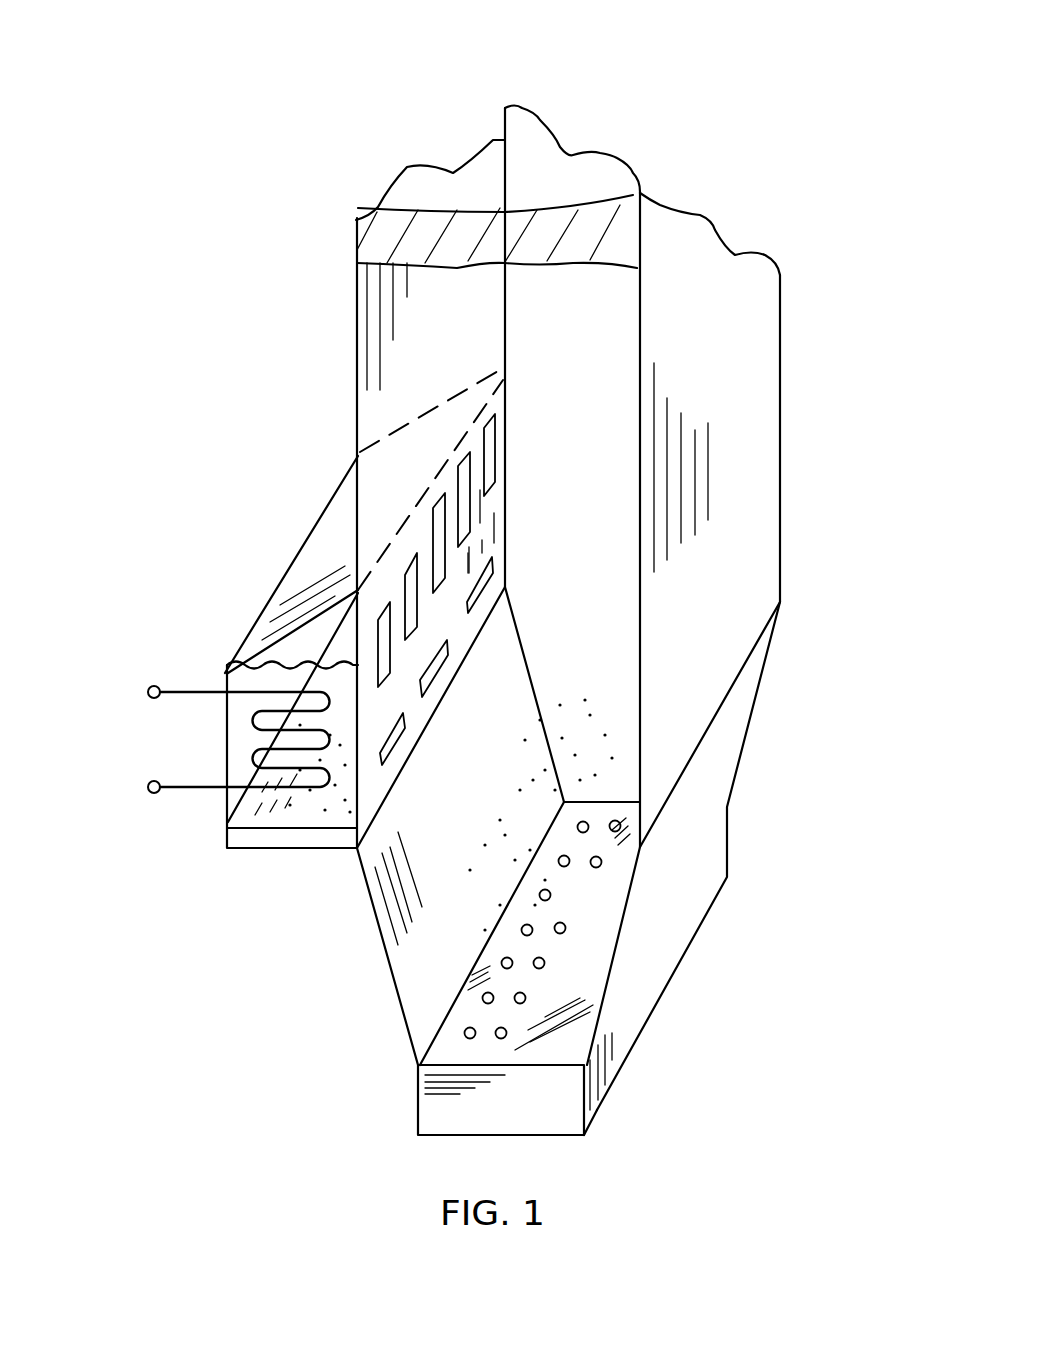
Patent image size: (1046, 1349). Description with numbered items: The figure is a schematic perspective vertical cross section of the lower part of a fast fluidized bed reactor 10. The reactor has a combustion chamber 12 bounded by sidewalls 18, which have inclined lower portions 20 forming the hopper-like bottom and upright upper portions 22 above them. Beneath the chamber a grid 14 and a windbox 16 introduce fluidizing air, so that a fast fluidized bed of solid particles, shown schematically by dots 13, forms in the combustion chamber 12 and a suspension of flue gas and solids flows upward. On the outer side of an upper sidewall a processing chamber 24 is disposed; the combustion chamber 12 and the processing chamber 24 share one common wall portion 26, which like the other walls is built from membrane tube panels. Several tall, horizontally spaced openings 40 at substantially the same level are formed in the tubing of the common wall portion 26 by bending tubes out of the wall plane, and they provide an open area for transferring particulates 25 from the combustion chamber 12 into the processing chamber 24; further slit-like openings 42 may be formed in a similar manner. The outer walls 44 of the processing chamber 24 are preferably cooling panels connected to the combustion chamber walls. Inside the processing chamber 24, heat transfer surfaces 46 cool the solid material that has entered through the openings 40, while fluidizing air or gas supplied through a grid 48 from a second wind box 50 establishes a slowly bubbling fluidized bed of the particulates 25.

The fast fluidized bed reactor 10 is at (712, 110).
The combustion chamber 12 is at (548, 183).
The dots 13 is at (612, 760).
The grid 14 is at (600, 931).
The windbox 16 is at (660, 968).
The sidewalls 18 is at (708, 480).
The inclined lower portions 20 is at (433, 913).
The upright upper portions 22 is at (367, 282).
The processing chamber 24 is at (176, 634).
The particulates 25 is at (338, 817).
The common wall portion 26 is at (478, 500).
The openings 40 is at (492, 425).
The openings 42 is at (390, 740).
The outer walls 44 is at (310, 587).
The heat transfer surfaces 46 is at (203, 693).
The grid 48 is at (273, 815).
The second wind box 50 is at (313, 840).